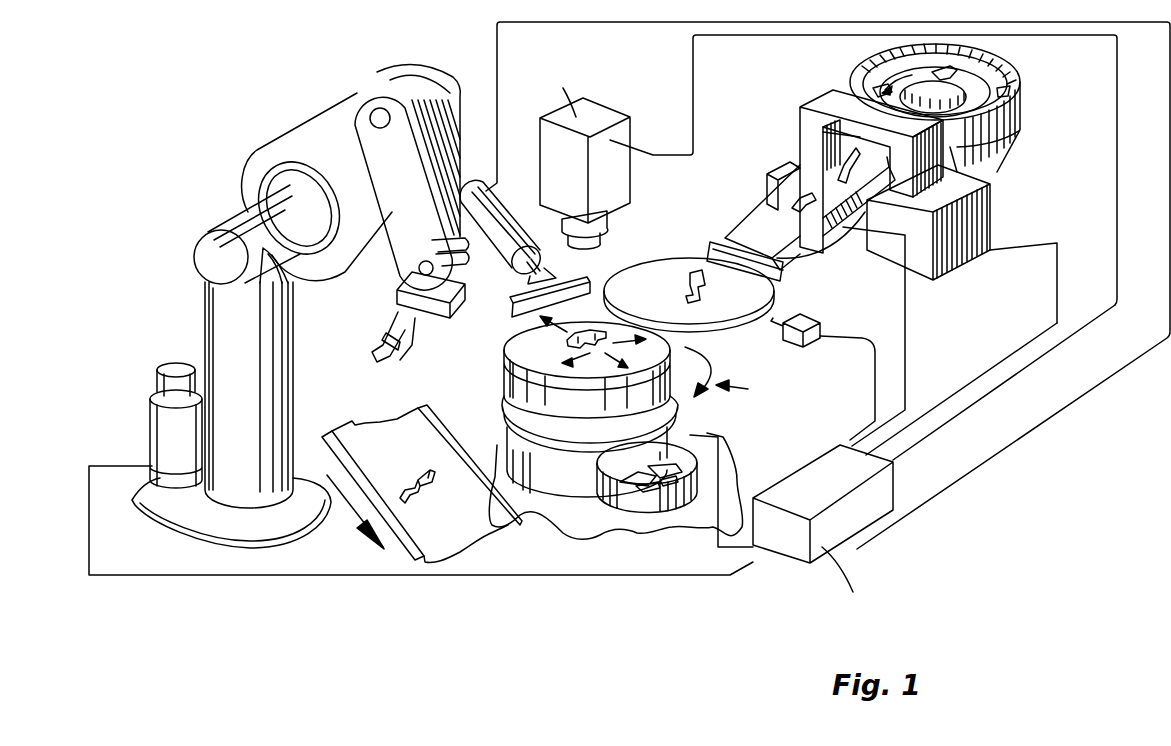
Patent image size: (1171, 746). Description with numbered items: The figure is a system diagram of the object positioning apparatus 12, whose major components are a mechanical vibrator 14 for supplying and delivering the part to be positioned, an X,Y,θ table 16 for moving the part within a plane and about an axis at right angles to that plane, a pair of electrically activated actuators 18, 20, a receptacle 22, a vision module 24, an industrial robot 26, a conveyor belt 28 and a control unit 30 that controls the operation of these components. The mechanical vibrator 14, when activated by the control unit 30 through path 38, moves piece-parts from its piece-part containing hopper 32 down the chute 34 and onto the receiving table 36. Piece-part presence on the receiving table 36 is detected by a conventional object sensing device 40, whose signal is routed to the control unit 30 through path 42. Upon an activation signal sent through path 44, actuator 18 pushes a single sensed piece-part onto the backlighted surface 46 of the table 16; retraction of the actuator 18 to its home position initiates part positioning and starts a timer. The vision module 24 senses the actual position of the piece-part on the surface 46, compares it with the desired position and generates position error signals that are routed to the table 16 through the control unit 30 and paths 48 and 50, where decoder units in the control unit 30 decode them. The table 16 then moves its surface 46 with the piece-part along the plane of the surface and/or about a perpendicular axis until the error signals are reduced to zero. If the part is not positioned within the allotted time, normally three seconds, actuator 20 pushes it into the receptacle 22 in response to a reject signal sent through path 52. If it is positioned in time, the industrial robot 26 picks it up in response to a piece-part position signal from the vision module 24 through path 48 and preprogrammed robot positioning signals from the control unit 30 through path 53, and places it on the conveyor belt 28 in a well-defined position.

The object positioning apparatus 12 is at (164, 153).
The mechanical vibrator 14 is at (1030, 93).
The X,Y,θ table 16 is at (727, 373).
The actuator 18 is at (842, 232).
The actuator 20 is at (482, 195).
The receptacle 22 is at (675, 457).
The vision module 24 is at (590, 116).
The industrial robot 26 is at (328, 140).
The conveyor belt 28 is at (407, 448).
The control unit 30 is at (880, 483).
The piece-part containing hopper 32 is at (972, 74).
The chute 34 is at (752, 230).
The receiving table 36 is at (652, 275).
The path 38 is at (1006, 354).
The object sensing device 40 is at (791, 343).
The path 42 is at (873, 350).
The path 44 is at (907, 357).
The backlighted surface 46 is at (537, 338).
The path 48 is at (1136, 117).
The path 50 is at (720, 533).
The path 52 is at (1170, 183).
The path 53 is at (385, 577).